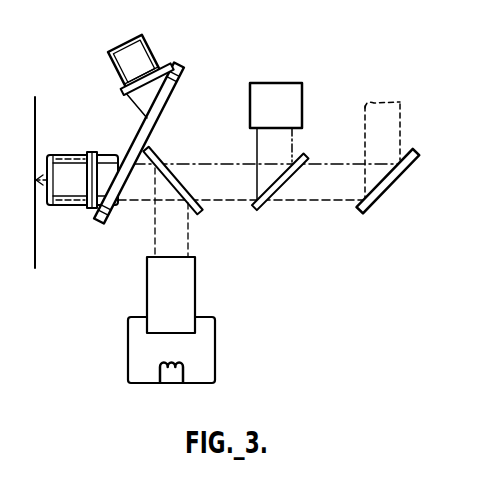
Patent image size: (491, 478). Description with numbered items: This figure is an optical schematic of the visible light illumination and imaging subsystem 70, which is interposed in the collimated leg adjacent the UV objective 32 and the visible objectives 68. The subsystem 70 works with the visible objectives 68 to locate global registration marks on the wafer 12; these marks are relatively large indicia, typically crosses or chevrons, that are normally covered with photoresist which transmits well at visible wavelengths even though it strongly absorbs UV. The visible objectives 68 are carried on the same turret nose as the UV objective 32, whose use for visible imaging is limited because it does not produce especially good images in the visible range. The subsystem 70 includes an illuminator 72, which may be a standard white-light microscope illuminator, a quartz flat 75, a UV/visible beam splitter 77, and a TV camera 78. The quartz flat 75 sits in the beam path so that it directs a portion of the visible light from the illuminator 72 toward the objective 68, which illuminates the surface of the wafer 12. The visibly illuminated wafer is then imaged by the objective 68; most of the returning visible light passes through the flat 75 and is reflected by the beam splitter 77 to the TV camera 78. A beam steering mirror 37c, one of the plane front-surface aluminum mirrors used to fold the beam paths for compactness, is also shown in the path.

The wafer 12 is at (36, 109).
The objective 32 is at (151, 54).
The visible objectives 68 is at (63, 156).
The visible light illumination and imaging subsystem 70 is at (292, 381).
The illuminator 72 is at (195, 301).
The quartz flat 75 is at (152, 151).
The UV/visible beam splitter 77 is at (256, 208).
The TV camera 78 is at (304, 73).
The beam steering mirror 37c is at (413, 160).